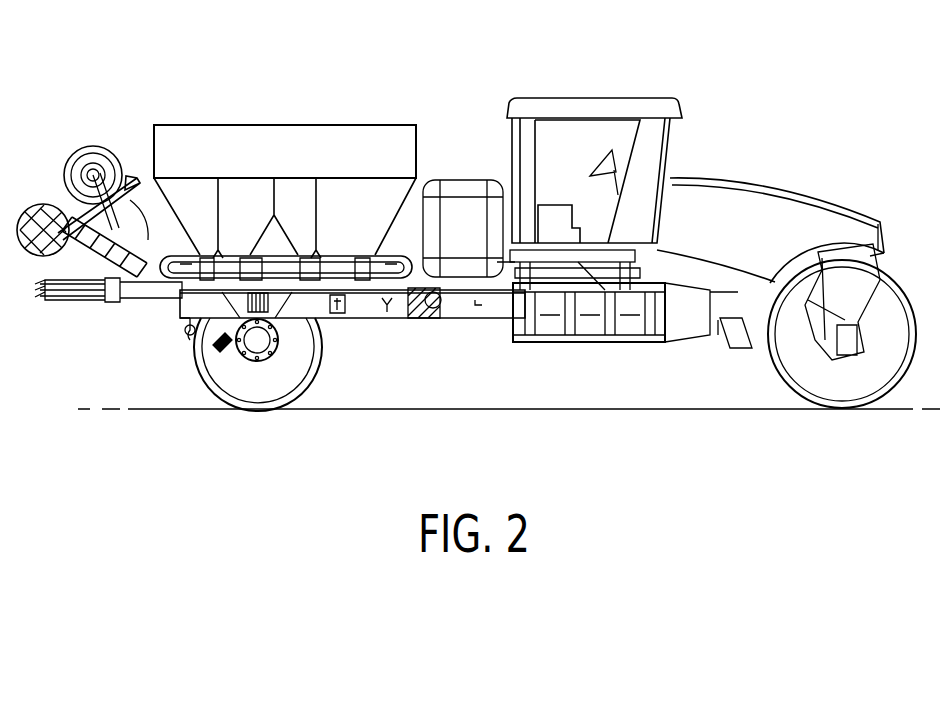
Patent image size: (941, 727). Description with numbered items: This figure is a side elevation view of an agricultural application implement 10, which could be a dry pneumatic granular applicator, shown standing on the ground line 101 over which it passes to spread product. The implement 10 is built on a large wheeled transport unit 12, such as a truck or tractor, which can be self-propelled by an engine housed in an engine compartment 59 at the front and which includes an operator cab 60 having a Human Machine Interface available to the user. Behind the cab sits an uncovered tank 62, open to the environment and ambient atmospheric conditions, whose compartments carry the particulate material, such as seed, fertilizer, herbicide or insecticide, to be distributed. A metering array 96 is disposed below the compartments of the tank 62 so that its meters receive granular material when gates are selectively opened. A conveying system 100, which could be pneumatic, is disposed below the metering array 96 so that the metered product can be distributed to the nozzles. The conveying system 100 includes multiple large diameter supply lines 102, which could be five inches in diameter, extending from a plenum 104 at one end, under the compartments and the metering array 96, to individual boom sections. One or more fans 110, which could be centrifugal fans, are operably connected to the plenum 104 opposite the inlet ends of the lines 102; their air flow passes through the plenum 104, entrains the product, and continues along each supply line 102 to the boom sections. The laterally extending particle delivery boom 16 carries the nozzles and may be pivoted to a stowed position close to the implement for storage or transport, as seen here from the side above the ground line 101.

The agricultural application implement 10 is at (580, 380).
The wheeled transport unit 12 is at (700, 168).
The particle delivery boom 16 is at (446, 322).
The engine compartment 59 is at (810, 182).
The operator cab 60 is at (600, 100).
The uncovered tank 62 is at (262, 107).
The metering array 96 is at (307, 292).
The conveying system 100 is at (248, 291).
The ground surface 101 is at (765, 410).
The large diameter supply line 102 is at (148, 268).
The plenum 104 is at (92, 265).
The fan 110 is at (67, 182).